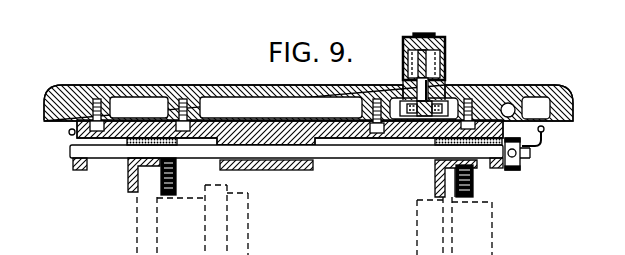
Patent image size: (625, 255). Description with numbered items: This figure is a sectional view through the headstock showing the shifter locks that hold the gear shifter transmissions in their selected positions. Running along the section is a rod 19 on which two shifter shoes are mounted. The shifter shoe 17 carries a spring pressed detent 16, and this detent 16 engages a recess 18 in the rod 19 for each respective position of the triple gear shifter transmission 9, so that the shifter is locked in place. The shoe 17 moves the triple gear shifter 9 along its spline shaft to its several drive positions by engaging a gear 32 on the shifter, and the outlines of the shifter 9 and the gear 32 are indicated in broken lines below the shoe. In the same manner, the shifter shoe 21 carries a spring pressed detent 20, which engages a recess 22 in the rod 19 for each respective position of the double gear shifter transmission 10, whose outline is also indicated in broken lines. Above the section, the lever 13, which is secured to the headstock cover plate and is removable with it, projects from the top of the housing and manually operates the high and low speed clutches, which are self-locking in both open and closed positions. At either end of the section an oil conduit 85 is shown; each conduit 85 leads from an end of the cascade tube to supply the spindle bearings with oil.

The lever 13 is at (437, 38).
The oil conduit 85 is at (68, 135).
The recess 18 is at (165, 126).
The shifter shoe 17 is at (128, 188).
The spring pressed detent 16 is at (175, 161).
The triple gear shifter transmission 9 is at (159, 218).
The gear 32 is at (137, 236).
The rod 19 is at (340, 160).
The recess 22 is at (429, 159).
The shifter shoe 21 is at (435, 186).
The spring pressed detent 20 is at (477, 171).
The double gear shifter transmission 10 is at (493, 227).